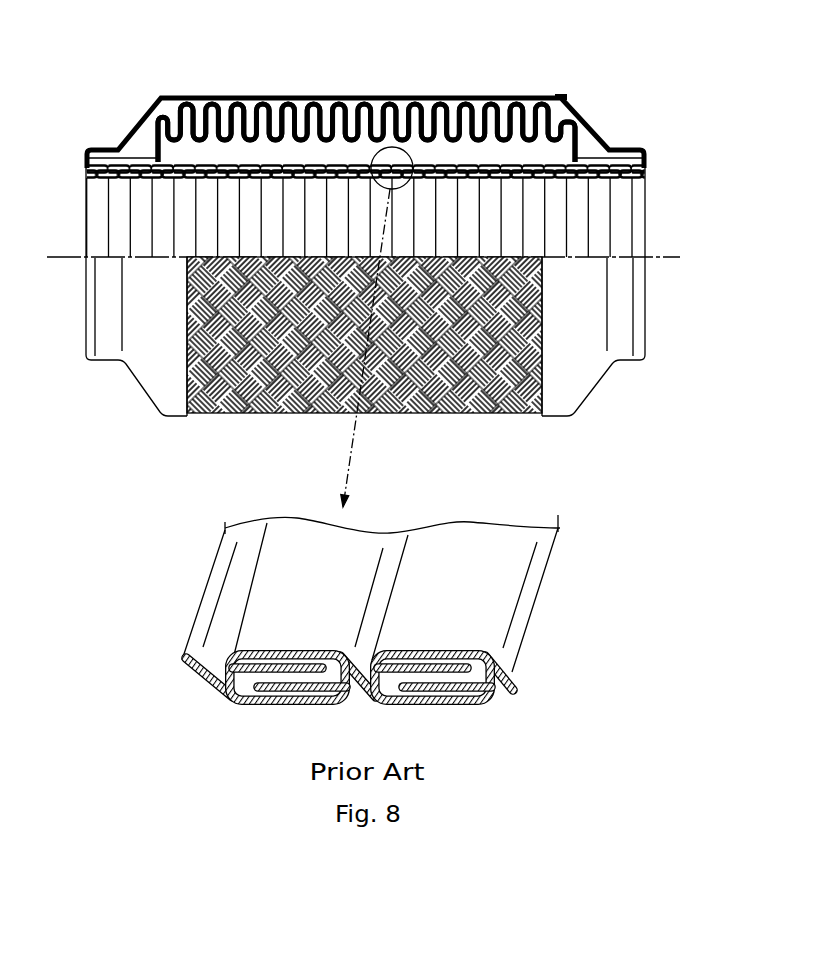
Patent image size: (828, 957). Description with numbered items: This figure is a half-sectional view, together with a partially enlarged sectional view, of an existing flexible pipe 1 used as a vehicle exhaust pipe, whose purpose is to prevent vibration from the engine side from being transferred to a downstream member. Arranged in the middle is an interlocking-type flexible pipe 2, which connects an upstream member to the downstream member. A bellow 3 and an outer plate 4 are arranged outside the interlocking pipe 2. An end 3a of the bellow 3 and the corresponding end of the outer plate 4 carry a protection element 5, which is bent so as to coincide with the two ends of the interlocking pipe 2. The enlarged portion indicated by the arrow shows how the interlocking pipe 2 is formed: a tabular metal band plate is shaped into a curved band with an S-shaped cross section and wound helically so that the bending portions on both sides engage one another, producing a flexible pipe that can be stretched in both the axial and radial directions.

The flexible pipe 1 is at (421, 47).
The interlocking-type flexible pipe 2 is at (192, 222).
The bellow 3 is at (504, 113).
The end of the bellow 3a is at (157, 118).
The outer plate 4 is at (299, 97).
The protection element 5 is at (563, 96).